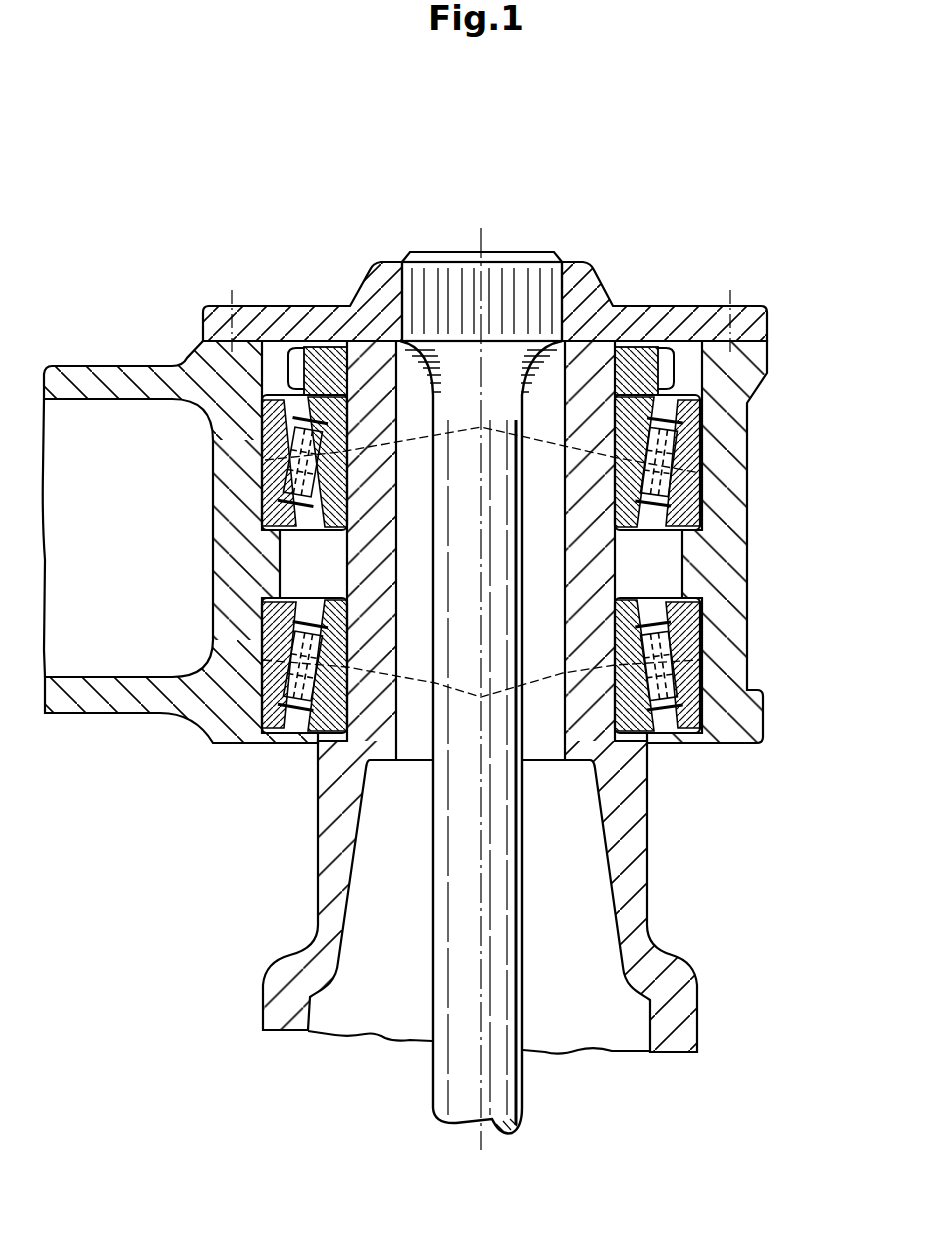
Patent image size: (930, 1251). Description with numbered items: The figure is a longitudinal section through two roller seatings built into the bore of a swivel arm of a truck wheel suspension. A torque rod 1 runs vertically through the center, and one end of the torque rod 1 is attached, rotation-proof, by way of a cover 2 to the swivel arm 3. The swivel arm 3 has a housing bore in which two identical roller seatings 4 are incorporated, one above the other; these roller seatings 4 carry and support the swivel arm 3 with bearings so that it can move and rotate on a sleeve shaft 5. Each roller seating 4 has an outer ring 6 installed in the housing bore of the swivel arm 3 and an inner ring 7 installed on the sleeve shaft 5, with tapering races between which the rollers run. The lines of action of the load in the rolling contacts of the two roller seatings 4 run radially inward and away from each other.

The torque rod 1 is at (503, 1083).
The cover 2 is at (752, 312).
The swivel arm 3 is at (742, 714).
The roller seating 4 is at (262, 408).
The sleeve shaft 5 is at (690, 1018).
The outer ring 6 is at (703, 470).
The inner ring 7 is at (324, 380).